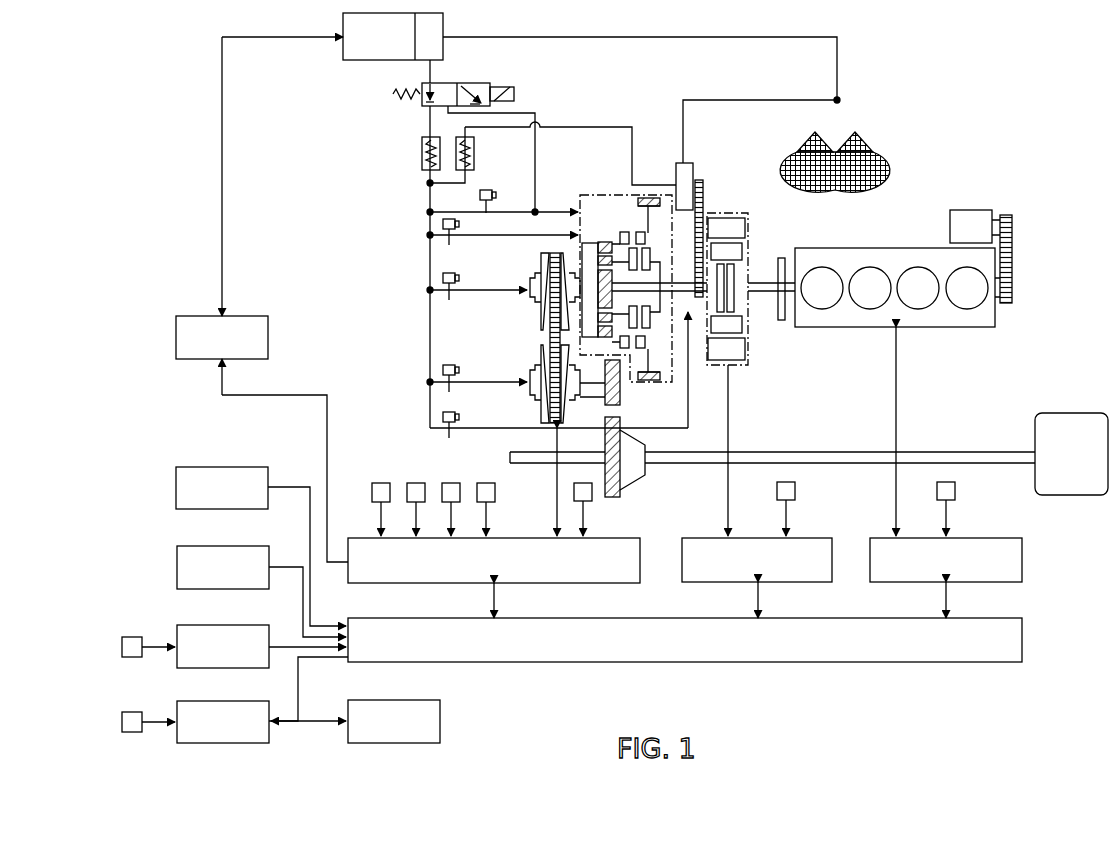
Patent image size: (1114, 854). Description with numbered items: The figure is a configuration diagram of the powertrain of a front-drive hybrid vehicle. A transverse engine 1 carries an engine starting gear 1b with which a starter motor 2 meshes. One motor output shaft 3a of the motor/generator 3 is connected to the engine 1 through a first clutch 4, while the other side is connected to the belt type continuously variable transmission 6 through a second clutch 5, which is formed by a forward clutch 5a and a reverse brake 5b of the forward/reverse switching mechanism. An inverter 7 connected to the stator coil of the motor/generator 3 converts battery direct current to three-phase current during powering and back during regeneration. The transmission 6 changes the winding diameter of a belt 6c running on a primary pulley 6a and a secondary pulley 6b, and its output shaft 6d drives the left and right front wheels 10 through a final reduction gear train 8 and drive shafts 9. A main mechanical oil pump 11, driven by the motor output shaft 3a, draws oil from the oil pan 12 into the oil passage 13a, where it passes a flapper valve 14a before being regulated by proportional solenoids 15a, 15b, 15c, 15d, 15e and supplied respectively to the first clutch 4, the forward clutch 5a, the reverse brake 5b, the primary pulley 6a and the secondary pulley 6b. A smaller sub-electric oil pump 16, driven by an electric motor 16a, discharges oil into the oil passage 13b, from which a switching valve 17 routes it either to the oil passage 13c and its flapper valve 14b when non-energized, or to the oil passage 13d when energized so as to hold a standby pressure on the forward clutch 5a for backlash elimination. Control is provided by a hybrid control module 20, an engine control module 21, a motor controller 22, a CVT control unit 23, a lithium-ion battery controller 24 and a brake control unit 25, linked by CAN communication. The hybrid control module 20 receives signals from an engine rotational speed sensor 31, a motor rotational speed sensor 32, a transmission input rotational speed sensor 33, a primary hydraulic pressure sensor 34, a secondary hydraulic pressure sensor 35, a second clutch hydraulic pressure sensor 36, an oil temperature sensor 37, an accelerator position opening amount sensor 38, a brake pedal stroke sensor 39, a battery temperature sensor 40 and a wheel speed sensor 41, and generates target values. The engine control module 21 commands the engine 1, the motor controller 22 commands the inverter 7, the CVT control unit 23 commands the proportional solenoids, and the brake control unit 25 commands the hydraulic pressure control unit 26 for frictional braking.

The engine 1 is at (995, 320).
The engine starting gear 1b is at (1012, 263).
The starter motor 2 is at (968, 210).
The motor/generator 3 is at (737, 355).
The motor output shaft 3a is at (713, 290).
The first clutch 4 is at (740, 270).
The second clutch 5 is at (620, 261).
The forward clutch 5a is at (610, 245).
The reverse brake 5b is at (632, 248).
The belt type continuously variable transmission 6 is at (539, 394).
The primary pulley 6a is at (530, 286).
The secondary pulley 6b is at (532, 380).
The belt 6c is at (553, 350).
The output shaft 6d is at (593, 398).
The inverter 7 is at (188, 316).
The final reduction gear train 8 is at (627, 413).
The drive shaft 9 is at (830, 452).
The front wheel 10 is at (1086, 413).
The main mechanical oil pump 11 is at (681, 163).
The oil pan 12 is at (842, 140).
The oil passage 13a is at (600, 127).
The oil passage 13b is at (430, 68).
The oil passage 13c is at (430, 125).
The oil passage 13d is at (535, 113).
The flapper valve 14a is at (474, 157).
The flapper valve 14b is at (422, 152).
The proportional solenoid 15a is at (443, 416).
The proportional solenoid 15b is at (443, 224).
The proportional solenoid 15c is at (486, 190).
The proportional solenoid 15d is at (443, 278).
The proportional solenoid 15e is at (443, 370).
The sub-electric oil pump 16 is at (445, 19).
The electric motor 16a is at (343, 52).
The switching valve 17 is at (470, 83).
The hybrid control module 20 is at (1024, 641).
The engine control module 21 is at (1024, 558).
The motor controller 22 is at (812, 538).
The CVT control unit 23 is at (362, 538).
The lithium-ion battery controller 24 is at (190, 625).
The brake control unit 25 is at (190, 701).
The hydraulic pressure control unit 26 is at (441, 719).
The engine rotational speed sensor 31 is at (957, 490).
The motor rotational speed sensor 32 is at (797, 490).
The transmission input rotational speed sensor 33 is at (589, 502).
The primary hydraulic pressure sensor 34 is at (487, 483).
The secondary hydraulic pressure sensor 35 is at (452, 483).
The second clutch hydraulic pressure sensor 36 is at (417, 483).
The oil temperature sensor 37 is at (382, 483).
The accelerator position opening amount sensor 38 is at (190, 467).
The brake pedal stroke sensor 39 is at (190, 546).
The battery temperature sensor 40 is at (126, 637).
The wheel speed sensor 41 is at (126, 712).